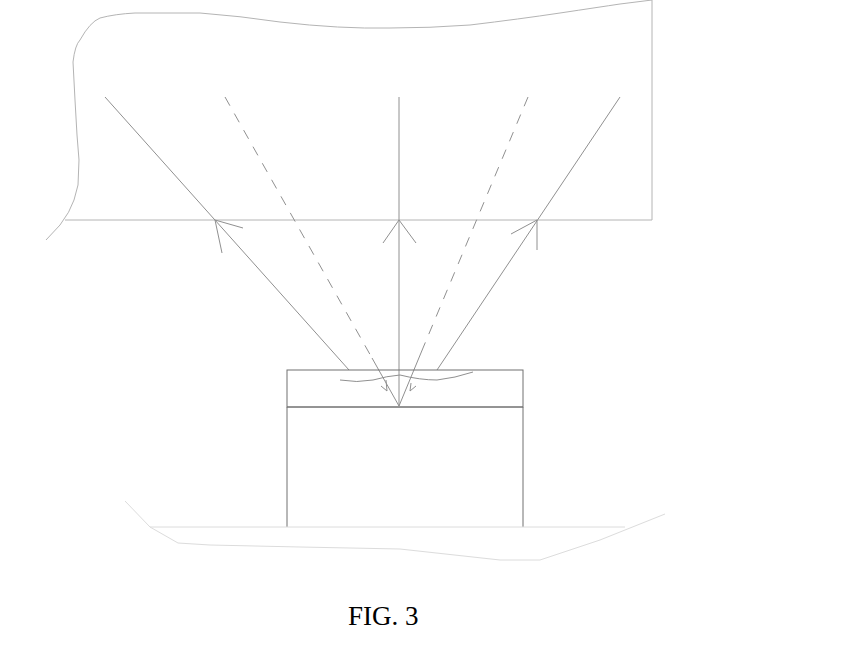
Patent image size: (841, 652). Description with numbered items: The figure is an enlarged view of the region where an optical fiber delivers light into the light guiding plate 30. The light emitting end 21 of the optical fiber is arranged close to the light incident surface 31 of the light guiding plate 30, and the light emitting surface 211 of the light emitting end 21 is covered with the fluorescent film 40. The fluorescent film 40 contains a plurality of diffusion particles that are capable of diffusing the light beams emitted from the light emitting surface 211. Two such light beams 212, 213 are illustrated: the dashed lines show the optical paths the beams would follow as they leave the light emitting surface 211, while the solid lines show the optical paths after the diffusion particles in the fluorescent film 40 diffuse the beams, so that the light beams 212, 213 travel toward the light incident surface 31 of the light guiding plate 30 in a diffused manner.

The light guiding plate 30 is at (580, 68).
The light incident surface 31 is at (605, 220).
The fluorescent film 40 is at (523, 392).
The light emitting end 21 is at (410, 483).
The light emitting surface 211 is at (368, 407).
The light beam 212 is at (340, 380).
The light beam 213 is at (473, 372).